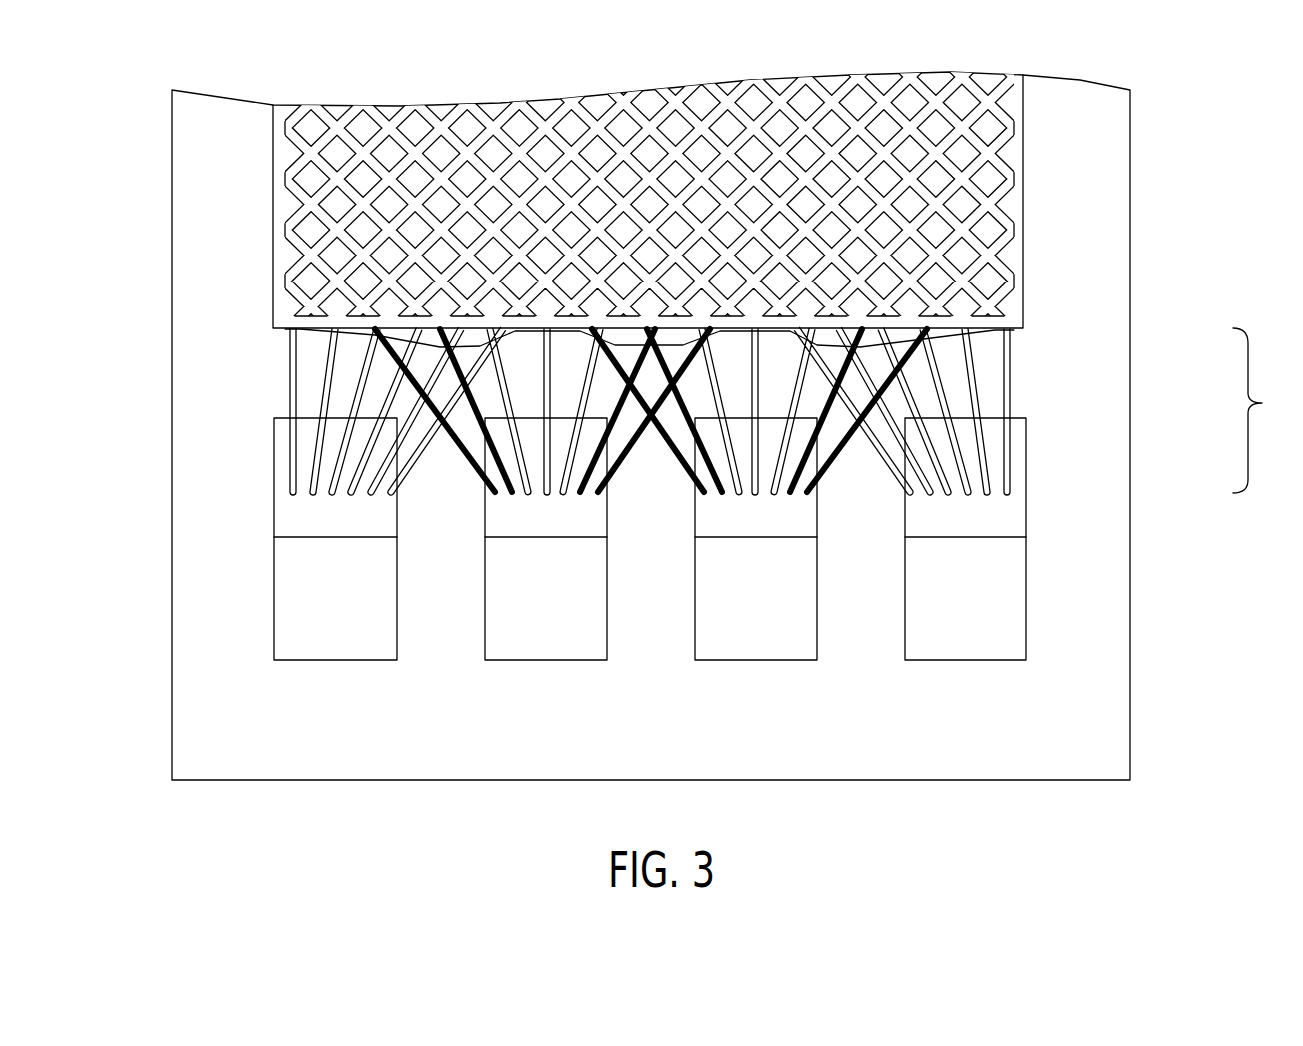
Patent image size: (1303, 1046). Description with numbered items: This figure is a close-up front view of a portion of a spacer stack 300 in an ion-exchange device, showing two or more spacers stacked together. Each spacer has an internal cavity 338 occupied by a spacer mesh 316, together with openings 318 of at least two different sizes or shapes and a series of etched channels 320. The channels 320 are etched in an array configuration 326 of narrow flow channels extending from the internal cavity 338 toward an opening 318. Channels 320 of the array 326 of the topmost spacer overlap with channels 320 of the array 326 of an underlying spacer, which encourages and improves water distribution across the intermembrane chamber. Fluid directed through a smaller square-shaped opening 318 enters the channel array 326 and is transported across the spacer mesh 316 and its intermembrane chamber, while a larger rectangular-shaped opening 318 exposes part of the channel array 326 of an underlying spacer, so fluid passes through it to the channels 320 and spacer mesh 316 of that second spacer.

The spacer stack 300 is at (100, 120).
The spacer mesh 316 is at (977, 112).
The openings 318 is at (333, 661).
The channels 320 is at (1012, 395).
The array configuration 326 is at (1267, 410).
The internal cavity 338 is at (292, 153).